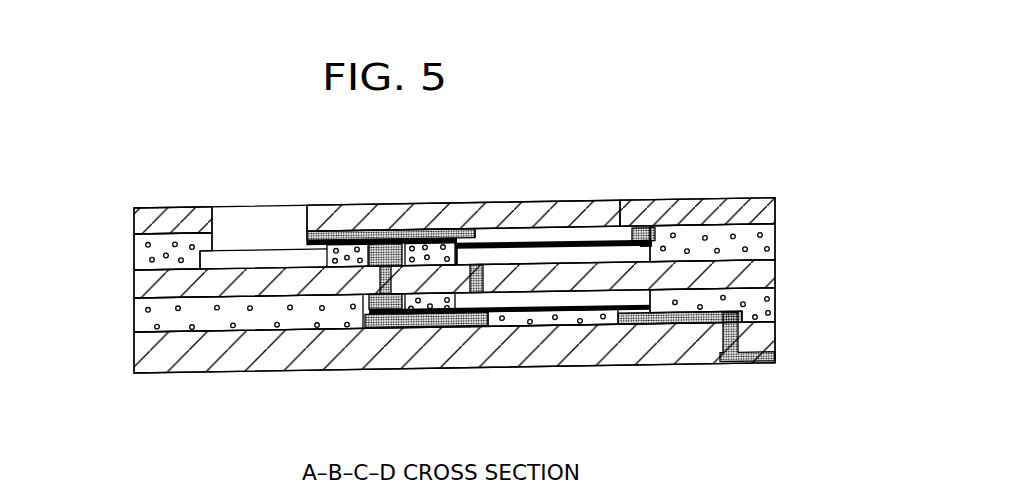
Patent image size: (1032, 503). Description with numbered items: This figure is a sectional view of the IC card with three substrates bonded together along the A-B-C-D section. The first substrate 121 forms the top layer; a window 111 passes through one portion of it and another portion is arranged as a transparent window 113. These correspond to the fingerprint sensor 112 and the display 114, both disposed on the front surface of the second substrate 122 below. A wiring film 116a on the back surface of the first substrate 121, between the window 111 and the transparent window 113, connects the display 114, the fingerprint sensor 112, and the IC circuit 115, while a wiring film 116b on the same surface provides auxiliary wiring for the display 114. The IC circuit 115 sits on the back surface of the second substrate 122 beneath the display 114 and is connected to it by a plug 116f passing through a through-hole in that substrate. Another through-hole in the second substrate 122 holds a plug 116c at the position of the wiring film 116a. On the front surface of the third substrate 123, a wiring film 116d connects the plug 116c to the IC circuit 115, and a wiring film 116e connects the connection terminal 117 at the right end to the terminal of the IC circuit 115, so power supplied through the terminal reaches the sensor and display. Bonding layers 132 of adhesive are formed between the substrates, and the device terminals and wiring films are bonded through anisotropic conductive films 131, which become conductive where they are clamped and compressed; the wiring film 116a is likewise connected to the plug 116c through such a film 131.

The window 111 is at (214, 223).
The fingerprint sensor 112 is at (258, 244).
The transparent window 113 is at (574, 202).
The display 114 is at (527, 249).
The IC circuit 115 is at (540, 302).
The wiring film 116a is at (445, 240).
The wiring film 116b is at (643, 226).
The plug 116c is at (370, 303).
The wiring film 116d is at (428, 328).
The wiring film 116e is at (666, 324).
The plug 116f is at (480, 265).
The connection terminal 117 is at (738, 365).
The first substrate 121 is at (715, 199).
The second substrate 122 is at (777, 270).
The third substrate 123 is at (600, 365).
The anisotropic conductive film 131 is at (390, 232).
The bonding layer 132 is at (133, 257).